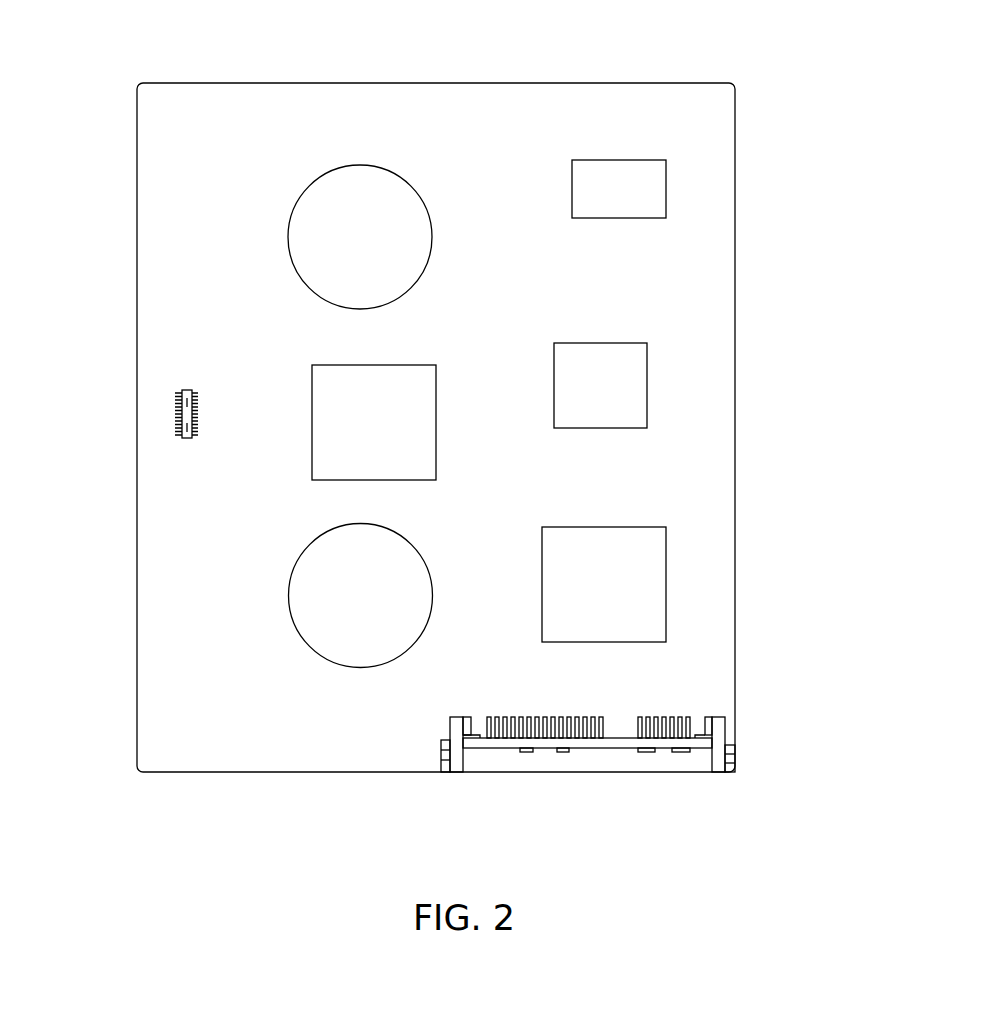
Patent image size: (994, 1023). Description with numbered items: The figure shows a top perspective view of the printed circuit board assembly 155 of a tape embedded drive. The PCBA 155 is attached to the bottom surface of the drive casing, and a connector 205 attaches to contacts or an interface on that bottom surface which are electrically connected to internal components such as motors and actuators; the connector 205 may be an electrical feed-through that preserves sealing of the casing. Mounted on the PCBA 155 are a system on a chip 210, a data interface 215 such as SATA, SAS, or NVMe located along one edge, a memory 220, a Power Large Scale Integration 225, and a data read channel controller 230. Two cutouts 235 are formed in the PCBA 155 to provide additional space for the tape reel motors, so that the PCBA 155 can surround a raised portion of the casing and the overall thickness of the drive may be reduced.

The printed circuit board assembly 155 is at (703, 108).
The connector 205 is at (173, 403).
The system on a chip 210 is at (640, 585).
The data interface 215 is at (604, 774).
The memory 220 is at (647, 185).
The Power Large Scale Integration 225 is at (632, 373).
The data read channel controller 230 is at (310, 378).
The cutout 235 is at (310, 228).